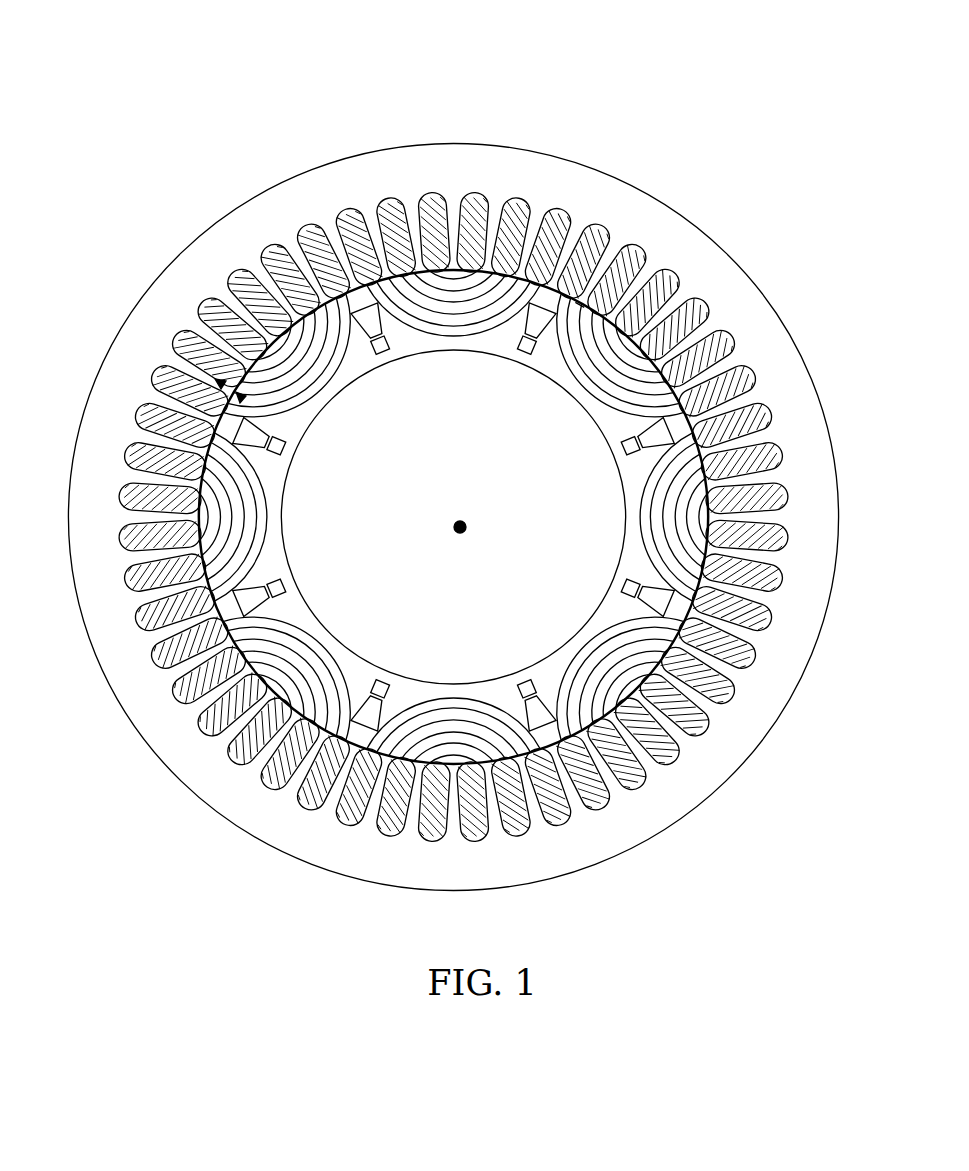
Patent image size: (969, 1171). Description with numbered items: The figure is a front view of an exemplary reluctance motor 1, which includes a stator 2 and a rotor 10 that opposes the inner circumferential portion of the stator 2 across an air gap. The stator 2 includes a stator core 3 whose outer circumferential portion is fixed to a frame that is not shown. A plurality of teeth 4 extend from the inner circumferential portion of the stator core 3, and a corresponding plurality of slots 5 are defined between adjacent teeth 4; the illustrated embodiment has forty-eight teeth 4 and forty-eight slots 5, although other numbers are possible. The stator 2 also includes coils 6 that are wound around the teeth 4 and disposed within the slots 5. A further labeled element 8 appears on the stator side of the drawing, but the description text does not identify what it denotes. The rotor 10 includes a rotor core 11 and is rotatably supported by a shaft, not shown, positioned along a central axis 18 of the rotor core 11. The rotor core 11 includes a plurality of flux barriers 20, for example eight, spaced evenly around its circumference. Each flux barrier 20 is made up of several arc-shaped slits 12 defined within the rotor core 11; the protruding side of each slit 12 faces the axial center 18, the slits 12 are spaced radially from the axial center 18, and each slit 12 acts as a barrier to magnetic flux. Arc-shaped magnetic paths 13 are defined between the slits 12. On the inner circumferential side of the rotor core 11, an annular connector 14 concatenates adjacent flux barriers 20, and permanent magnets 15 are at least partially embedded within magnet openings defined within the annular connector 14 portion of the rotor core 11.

The reluctance motor 1 is at (453, 448).
The stator 2 is at (483, 143).
The stator core 3 is at (612, 248).
The teeth 4 is at (629, 244).
The slots 5 is at (583, 238).
The coils 6 is at (551, 268).
The stator tooth 8 is at (153, 345).
The rotor 10 is at (372, 300).
The rotor core 11 is at (445, 350).
The arc-shaped slits 12 is at (615, 449).
The arc-shaped magnetic paths 13 is at (600, 408).
The annular connector 14 is at (418, 358).
The permanent magnets 15 is at (386, 362).
The central axis 18 is at (467, 530).
The flux barriers 20 is at (590, 382).